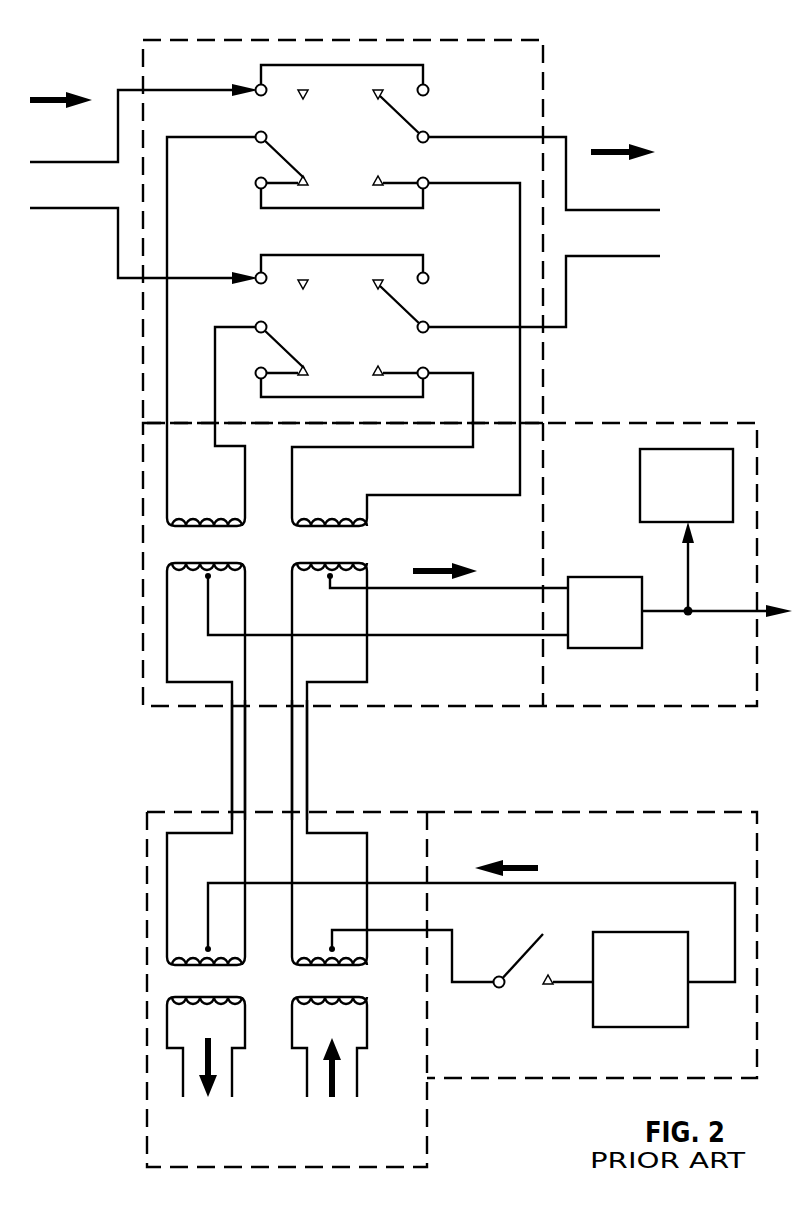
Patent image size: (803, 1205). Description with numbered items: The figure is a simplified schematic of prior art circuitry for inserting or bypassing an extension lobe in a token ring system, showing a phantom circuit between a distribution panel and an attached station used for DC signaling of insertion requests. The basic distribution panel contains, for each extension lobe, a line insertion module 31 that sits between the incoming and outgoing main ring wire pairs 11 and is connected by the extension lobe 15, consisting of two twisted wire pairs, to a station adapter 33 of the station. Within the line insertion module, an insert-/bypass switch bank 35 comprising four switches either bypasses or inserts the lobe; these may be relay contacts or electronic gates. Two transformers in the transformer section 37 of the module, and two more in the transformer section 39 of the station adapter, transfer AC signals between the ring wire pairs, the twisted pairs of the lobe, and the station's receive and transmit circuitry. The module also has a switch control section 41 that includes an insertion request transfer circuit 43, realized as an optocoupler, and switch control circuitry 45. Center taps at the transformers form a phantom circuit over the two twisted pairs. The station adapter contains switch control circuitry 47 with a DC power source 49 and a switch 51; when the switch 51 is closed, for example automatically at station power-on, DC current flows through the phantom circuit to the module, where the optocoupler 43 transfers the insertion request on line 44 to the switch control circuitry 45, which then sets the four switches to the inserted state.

The ring wire pairs 11 is at (52, 212).
The insert-/bypass switch bank 35 is at (219, 40).
The line insertion module 31 is at (424, 694).
The transformer section 37 is at (432, 707).
The switch control section 41 is at (680, 595).
The insertion request transfer circuit 43 is at (612, 577).
The line 44 is at (656, 620).
The switch control circuitry 45 is at (640, 489).
The extension lobe 15 is at (198, 760).
The station adapter 33 is at (407, 972).
The transformer section 39 is at (402, 810).
The switch control circuitry 47 is at (592, 929).
The DC power source 49 is at (622, 1028).
The switch 51 is at (525, 944).